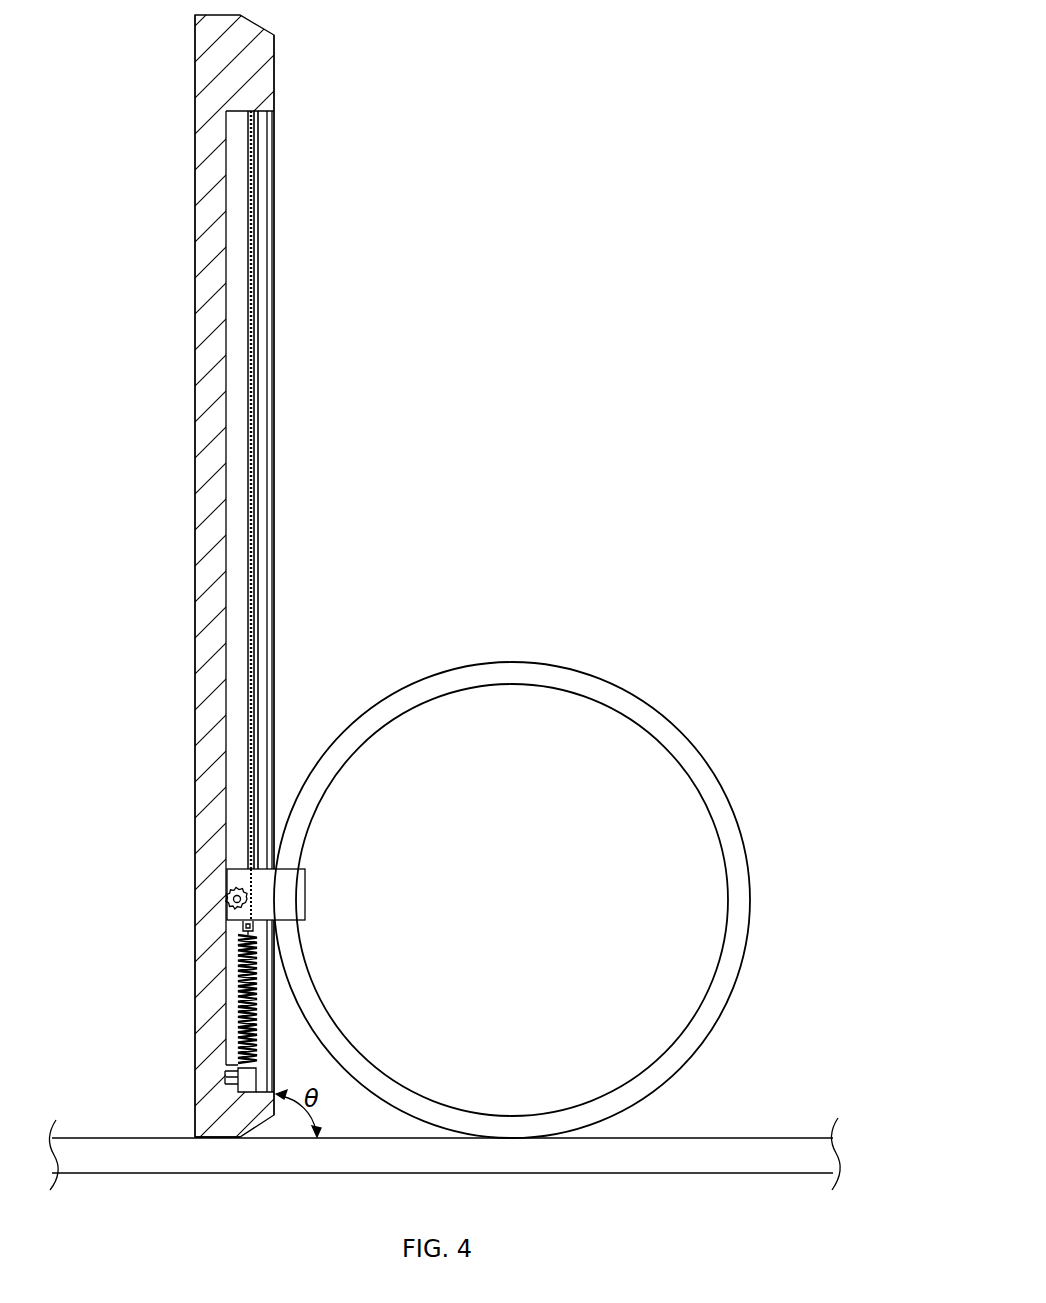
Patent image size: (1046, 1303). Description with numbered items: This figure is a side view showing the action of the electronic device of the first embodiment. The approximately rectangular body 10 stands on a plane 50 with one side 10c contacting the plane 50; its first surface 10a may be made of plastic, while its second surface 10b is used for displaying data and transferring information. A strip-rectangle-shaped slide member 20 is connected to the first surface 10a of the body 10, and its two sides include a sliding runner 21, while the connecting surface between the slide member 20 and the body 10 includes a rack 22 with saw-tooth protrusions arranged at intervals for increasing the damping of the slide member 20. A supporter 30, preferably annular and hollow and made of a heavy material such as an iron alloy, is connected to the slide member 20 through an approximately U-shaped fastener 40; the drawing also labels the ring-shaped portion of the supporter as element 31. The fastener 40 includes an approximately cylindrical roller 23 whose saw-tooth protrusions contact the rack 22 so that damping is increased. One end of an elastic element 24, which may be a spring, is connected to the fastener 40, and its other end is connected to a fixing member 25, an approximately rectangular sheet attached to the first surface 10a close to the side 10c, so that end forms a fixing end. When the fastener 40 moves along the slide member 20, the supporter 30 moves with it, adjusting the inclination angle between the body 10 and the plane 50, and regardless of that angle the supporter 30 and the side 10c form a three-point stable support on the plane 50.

The body 10 is at (272, 48).
The first surface 10a is at (276, 82).
The second surface 10b is at (195, 79).
The side 10c is at (216, 1140).
The slide member 20 is at (272, 185).
The sliding runner 21 is at (259, 262).
The rack 22 is at (248, 306).
The roller 23 is at (228, 893).
The elastic element 24 is at (240, 992).
The fixing member 25 is at (228, 1076).
The supporter 30 is at (527, 678).
The ring body 31 is at (730, 735).
The fastener 40 is at (290, 896).
The plane 50 is at (731, 1158).